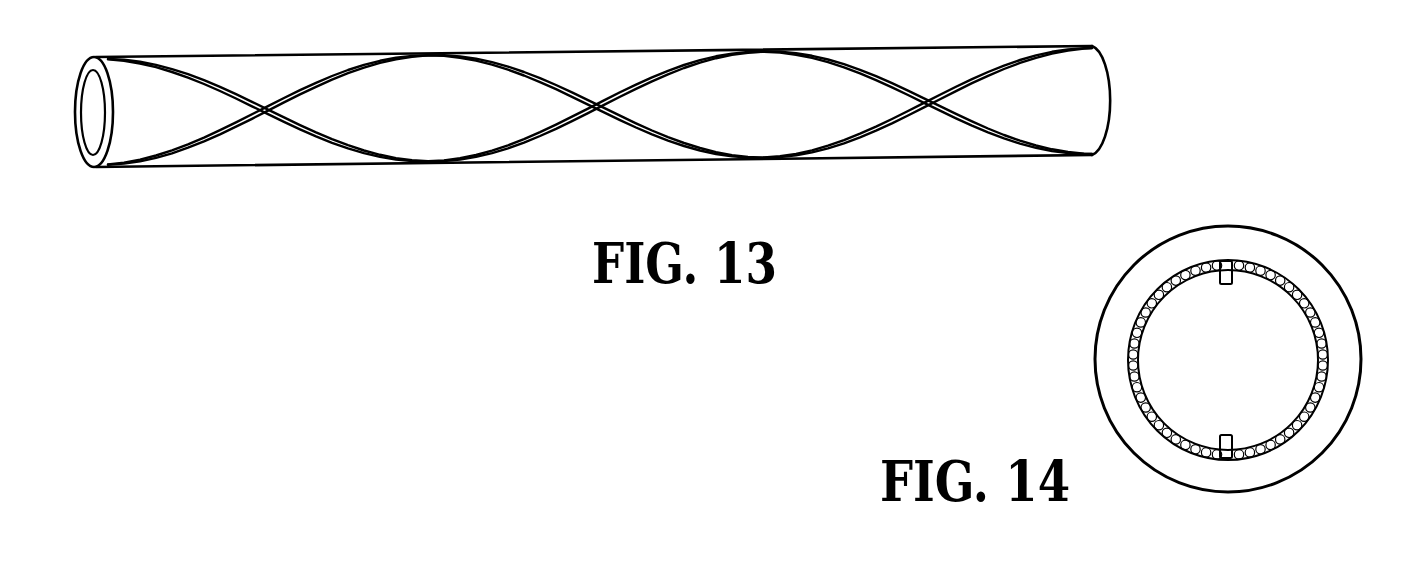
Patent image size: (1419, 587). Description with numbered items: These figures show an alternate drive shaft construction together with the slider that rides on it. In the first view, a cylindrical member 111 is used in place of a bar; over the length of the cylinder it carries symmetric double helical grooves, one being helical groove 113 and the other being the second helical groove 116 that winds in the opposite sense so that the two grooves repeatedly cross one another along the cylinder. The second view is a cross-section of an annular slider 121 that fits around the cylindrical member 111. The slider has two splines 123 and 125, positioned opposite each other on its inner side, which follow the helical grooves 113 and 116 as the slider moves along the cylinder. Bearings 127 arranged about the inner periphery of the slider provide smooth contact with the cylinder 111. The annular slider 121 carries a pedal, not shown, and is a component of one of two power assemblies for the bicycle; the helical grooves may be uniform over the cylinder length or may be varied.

In FIG. 13, the cylindrical member 111 is at (604, 68).
In FIG. 13, the helical groove 113 is at (334, 70).
In FIG. 13, the second helical strand 116 is at (340, 152).
In FIG. 14, the annular slider 121 is at (1317, 268).
In FIG. 14, the spline 123 is at (1233, 275).
In FIG. 14, the spline 125 is at (1233, 441).
In FIG. 14, the bearings 127 is at (1142, 357).